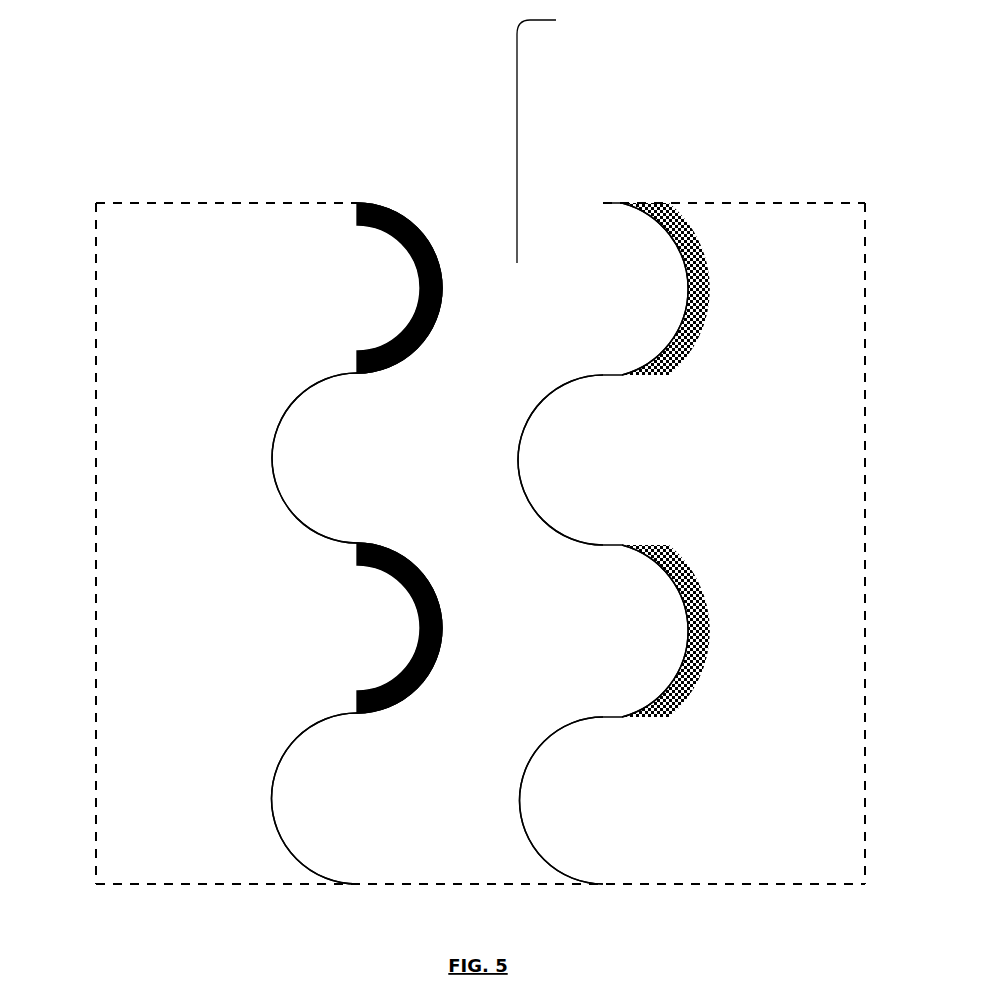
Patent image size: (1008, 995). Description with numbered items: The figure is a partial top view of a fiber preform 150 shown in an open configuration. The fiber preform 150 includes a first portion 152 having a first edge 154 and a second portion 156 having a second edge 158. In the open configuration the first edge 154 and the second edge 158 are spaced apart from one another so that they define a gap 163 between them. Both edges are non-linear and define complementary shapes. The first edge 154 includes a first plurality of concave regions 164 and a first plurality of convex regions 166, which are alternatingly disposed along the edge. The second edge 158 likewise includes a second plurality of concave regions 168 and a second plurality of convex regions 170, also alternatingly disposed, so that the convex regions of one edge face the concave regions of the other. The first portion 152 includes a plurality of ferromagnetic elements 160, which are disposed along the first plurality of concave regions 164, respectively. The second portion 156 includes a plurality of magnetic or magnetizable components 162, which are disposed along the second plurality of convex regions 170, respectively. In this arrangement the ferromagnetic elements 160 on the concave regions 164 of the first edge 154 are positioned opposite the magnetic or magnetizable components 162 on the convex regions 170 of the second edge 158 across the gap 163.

The fiber preform 150 is at (125, 114).
The first portion 152 is at (731, 857).
The first edge 154 is at (657, 222).
The second portion 156 is at (187, 849).
The second edge 158 is at (440, 258).
The ferromagnetic elements 160 is at (708, 295).
The magnetic or magnetizable components 162 is at (408, 324).
The gap 163 is at (554, 138).
The first plurality of concave regions 164 is at (688, 252).
The first plurality of convex regions 166 is at (525, 486).
The second plurality of concave regions 168 is at (274, 427).
The second plurality of convex regions 170 is at (416, 354).